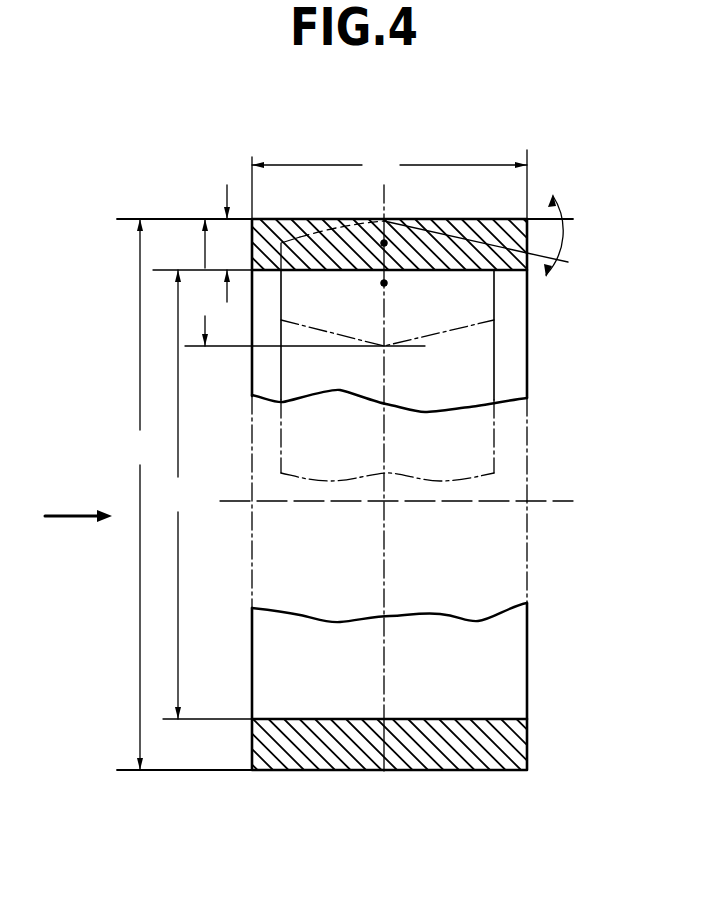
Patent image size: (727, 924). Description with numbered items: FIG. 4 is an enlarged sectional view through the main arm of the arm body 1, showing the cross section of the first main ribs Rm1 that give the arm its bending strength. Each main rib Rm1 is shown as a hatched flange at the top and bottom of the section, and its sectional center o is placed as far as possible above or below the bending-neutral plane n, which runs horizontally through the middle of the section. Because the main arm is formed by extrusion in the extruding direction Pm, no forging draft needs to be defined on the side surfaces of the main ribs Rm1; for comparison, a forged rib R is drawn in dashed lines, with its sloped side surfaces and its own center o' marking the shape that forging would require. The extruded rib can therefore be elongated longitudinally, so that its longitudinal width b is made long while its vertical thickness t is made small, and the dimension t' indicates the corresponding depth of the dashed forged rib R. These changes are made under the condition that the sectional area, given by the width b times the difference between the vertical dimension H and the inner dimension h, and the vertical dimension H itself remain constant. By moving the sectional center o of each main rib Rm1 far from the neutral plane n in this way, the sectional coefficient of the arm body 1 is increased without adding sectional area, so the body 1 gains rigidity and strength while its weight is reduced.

The arm body 1 is at (560, 752).
The first main rib Rm1 is at (505, 270).
The rib R is at (451, 327).
The sectional center o is at (358, 213).
The centre of inner radius o' is at (349, 336).
The vertical dimension H is at (140, 494).
The vertical dimension h is at (178, 494).
The vertical thickness t is at (212, 238).
The flange thickness to radius centre t' is at (200, 282).
The longitudinal width b is at (389, 182).
The bending-neutral plane n is at (553, 497).
The extruding direction Pm is at (70, 513).